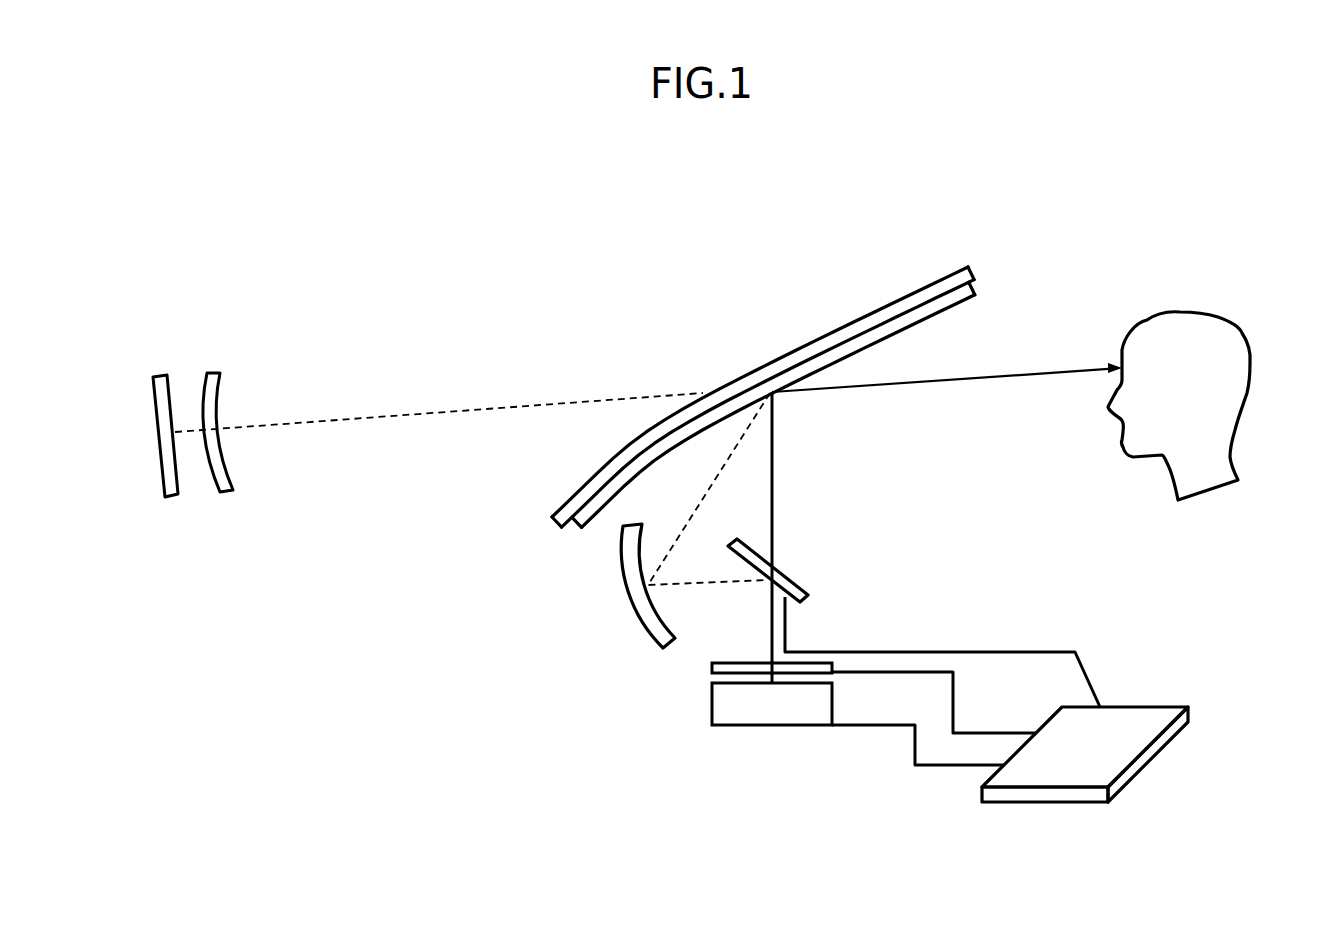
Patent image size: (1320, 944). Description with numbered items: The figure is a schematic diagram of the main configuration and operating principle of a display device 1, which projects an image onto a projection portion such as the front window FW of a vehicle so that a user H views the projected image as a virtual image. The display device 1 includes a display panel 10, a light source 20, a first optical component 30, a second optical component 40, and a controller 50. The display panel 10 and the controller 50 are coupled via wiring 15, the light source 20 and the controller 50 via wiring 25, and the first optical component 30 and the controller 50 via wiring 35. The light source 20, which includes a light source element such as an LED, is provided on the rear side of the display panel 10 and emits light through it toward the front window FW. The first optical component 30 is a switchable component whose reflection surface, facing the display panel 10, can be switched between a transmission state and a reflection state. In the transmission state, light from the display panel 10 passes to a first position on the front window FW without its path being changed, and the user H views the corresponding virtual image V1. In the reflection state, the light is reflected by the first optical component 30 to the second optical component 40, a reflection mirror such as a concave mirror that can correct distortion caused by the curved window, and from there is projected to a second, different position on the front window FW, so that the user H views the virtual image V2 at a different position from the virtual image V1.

The display device 1 is at (345, 170).
The display panel 10 is at (712, 667).
The light source 20 is at (712, 702).
The first optical component 30 is at (800, 582).
The second optical component 40 is at (633, 607).
The wiring 15 is at (873, 675).
The wiring 25 is at (930, 768).
The wiring 35 is at (1027, 650).
The controller 50 is at (1048, 803).
The front window FW is at (922, 293).
The user H is at (1210, 312).
The virtual image V1 is at (227, 493).
The virtual image V2 is at (172, 498).